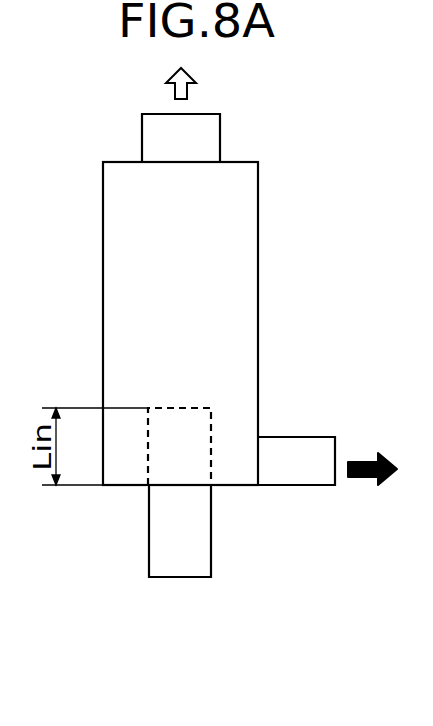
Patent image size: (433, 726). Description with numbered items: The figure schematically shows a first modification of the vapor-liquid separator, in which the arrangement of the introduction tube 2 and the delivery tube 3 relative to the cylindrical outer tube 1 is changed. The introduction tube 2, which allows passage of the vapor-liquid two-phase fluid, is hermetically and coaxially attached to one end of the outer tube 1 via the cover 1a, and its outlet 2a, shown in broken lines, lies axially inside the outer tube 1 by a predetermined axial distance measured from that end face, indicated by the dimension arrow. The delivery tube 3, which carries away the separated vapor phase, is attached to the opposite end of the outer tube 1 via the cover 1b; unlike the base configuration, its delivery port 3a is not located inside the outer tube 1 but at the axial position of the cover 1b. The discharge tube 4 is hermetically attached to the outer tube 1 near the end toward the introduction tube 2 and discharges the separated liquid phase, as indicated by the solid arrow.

The outer tube 1 is at (258, 253).
The cover 1a is at (243, 485).
The cover 1b is at (244, 163).
The introduction tube 2 is at (148, 532).
The outlet 2a is at (180, 408).
The delivery tube 3 is at (220, 126).
The delivery port 3a is at (180, 162).
The discharge tube 4 is at (295, 437).